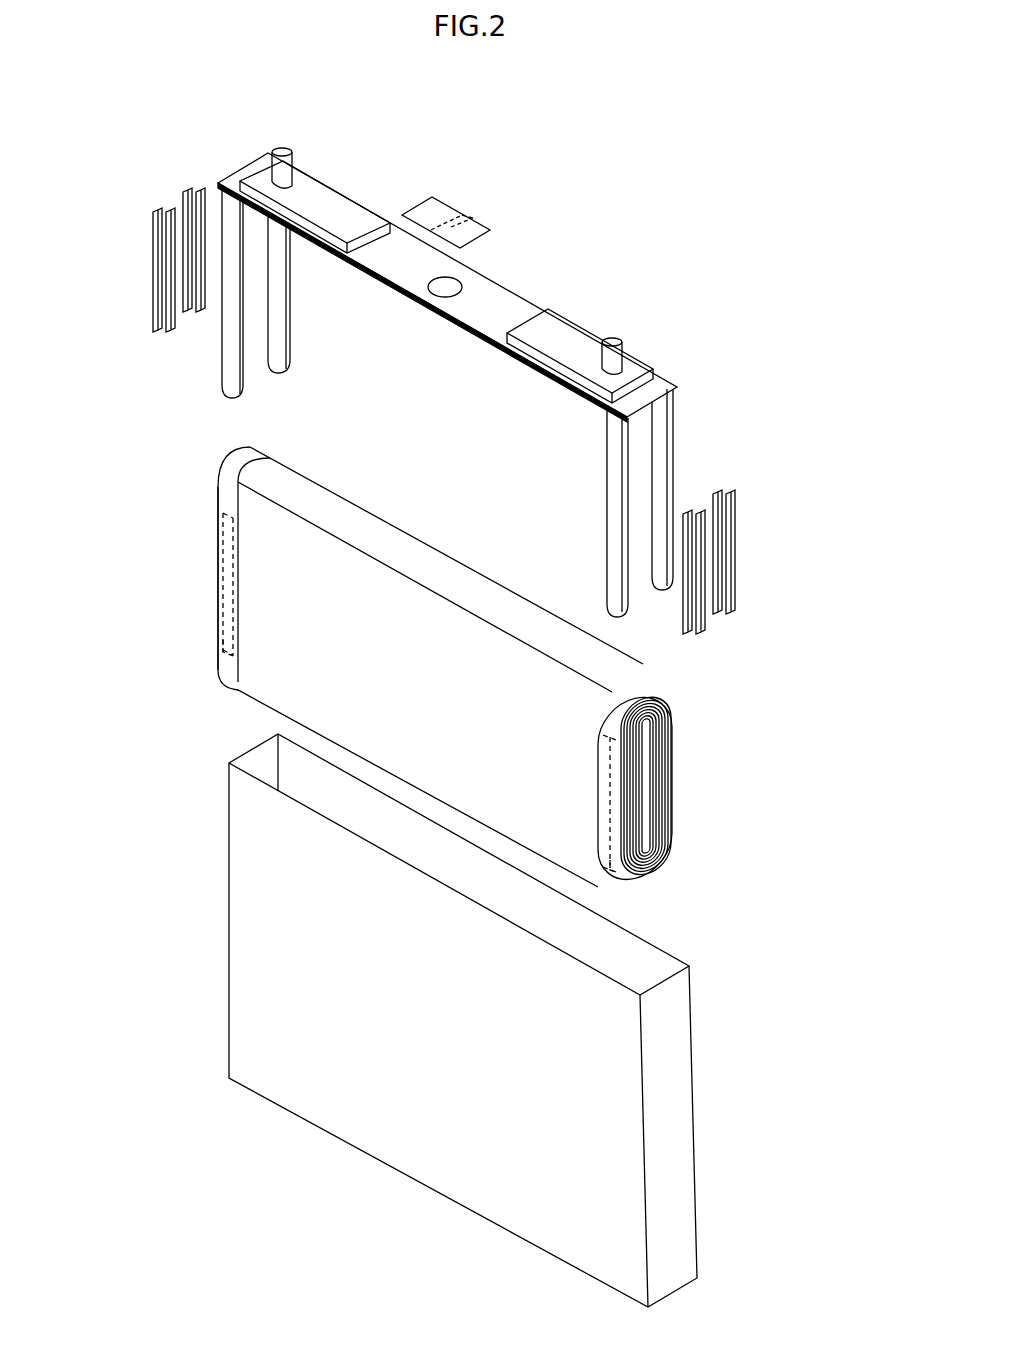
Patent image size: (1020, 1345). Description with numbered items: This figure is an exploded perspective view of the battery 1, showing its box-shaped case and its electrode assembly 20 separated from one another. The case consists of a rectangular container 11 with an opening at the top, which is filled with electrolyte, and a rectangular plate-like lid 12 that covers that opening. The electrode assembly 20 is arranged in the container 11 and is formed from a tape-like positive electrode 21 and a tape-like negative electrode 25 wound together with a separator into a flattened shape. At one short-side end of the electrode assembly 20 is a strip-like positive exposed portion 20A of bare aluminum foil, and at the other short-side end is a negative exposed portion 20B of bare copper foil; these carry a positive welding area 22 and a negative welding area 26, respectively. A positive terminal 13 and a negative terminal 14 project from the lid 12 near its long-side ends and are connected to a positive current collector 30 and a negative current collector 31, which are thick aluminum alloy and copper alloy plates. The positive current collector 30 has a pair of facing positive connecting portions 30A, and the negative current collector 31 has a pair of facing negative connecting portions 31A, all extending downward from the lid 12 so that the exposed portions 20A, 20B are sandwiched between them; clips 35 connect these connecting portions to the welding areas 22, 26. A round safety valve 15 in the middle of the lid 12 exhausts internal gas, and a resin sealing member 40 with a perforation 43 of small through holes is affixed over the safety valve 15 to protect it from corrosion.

The battery 1 is at (573, 212).
The container 11 is at (707, 1100).
The lid 12 is at (447, 268).
The positive terminal 13 is at (647, 345).
The negative terminal 14 is at (305, 146).
The safety valve 15 is at (446, 282).
The electrode assembly 20 is at (438, 661).
The positive exposed portion 20A is at (607, 718).
The negative exposed portion 20B is at (228, 498).
The positive electrode 21 is at (635, 673).
The positive welding area 22 is at (668, 885).
The negative electrode 25 is at (242, 462).
The negative welding area 26 is at (222, 656).
The positive current collector 30 is at (709, 496).
The positive connecting portions 30A is at (628, 478).
The negative current collector 31 is at (211, 256).
The negative connecting portions 31A is at (273, 358).
The clips 35 is at (186, 203).
The sealing member 40 is at (452, 181).
The perforation 43 is at (476, 217).